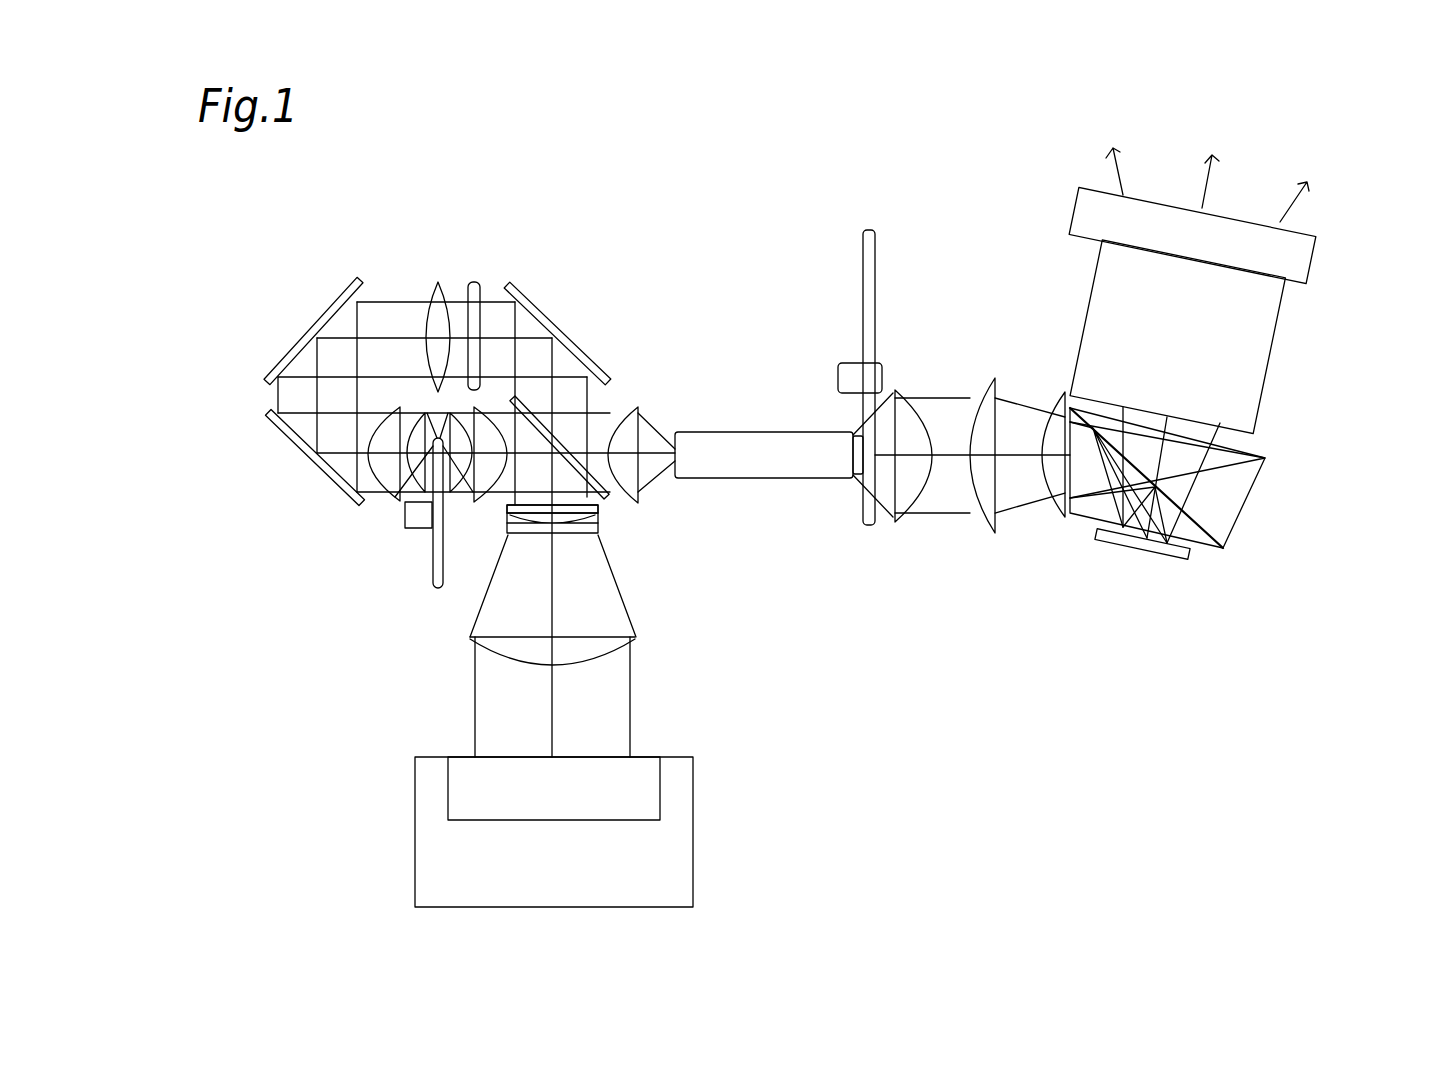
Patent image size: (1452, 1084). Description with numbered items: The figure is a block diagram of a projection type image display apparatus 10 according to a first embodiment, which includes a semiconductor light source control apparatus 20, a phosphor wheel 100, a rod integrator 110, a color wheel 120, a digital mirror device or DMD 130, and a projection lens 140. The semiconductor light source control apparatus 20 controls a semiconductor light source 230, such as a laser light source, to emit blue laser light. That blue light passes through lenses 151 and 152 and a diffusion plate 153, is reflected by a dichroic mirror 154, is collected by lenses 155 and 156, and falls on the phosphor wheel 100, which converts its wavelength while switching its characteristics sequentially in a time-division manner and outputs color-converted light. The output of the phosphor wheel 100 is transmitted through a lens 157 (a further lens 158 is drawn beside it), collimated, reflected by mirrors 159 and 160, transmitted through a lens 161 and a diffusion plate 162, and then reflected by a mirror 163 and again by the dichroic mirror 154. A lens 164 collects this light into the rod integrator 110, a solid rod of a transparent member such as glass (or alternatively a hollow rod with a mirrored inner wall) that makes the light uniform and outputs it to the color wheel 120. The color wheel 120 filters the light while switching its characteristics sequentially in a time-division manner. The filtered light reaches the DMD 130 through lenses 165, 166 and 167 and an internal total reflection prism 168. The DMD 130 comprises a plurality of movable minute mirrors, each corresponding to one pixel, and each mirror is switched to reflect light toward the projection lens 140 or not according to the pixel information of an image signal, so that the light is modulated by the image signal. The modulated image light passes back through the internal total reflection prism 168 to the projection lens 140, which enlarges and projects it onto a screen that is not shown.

The projection type image display apparatus 10 is at (763, 161).
The semiconductor light source control apparatus 20 is at (693, 862).
The phosphor wheel 100 is at (428, 600).
The rod integrator 110 is at (750, 478).
The color wheel 120 is at (873, 525).
The digital mirror device (DMD) 130 is at (1190, 556).
The projection lens 140 is at (1313, 247).
The lens 151 is at (635, 640).
The lens 152 is at (600, 535).
The diffusion plate 153 is at (600, 513).
The dichroic mirror 154 is at (600, 500).
The lens 155 is at (493, 495).
The lens 156 is at (437, 590).
The lens 157 is at (413, 487).
The condenser lens 158 is at (395, 497).
The mirror 159 is at (282, 430).
The mirror 160 is at (265, 380).
The lens 161 is at (438, 282).
The diffusion plate 162 is at (474, 282).
The mirror 163 is at (543, 305).
The lens 164 is at (640, 398).
The lens 165 is at (895, 390).
The lens 166 is at (992, 537).
The lens 167 is at (1062, 397).
The internal total reflection prism 168 is at (1242, 503).
The semiconductor light source 230 is at (660, 787).